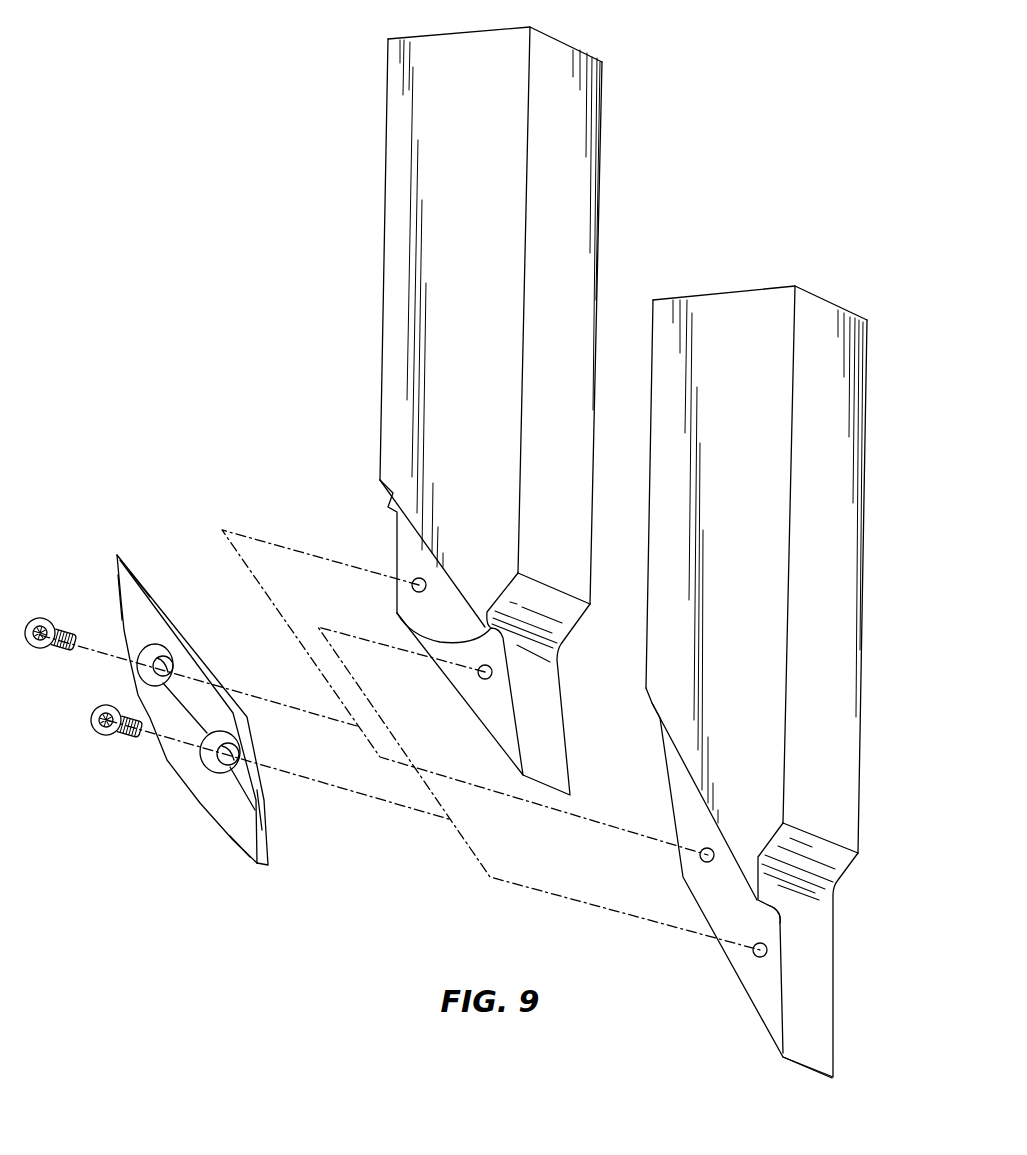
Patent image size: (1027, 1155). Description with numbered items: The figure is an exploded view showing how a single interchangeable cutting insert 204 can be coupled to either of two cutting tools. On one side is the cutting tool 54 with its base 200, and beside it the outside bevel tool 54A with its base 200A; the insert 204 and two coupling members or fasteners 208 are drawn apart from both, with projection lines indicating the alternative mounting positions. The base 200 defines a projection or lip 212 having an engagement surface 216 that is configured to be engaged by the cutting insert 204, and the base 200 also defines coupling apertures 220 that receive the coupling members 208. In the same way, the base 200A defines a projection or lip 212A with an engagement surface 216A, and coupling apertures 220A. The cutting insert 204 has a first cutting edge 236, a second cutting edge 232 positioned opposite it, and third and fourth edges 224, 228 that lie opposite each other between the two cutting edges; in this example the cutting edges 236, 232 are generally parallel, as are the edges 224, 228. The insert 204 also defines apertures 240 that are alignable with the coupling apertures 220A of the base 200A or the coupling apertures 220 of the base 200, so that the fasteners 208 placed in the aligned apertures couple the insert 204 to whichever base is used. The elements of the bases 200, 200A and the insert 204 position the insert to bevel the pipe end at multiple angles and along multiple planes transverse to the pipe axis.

The tool 54 is at (495, 411).
The tool 54A is at (762, 682).
The base 200 is at (577, 177).
The base 200A is at (840, 398).
The cutting insert 204 is at (190, 706).
The coupling members 208 is at (47, 650).
The projection or lip 212 is at (380, 483).
The projection or lip 212A is at (652, 703).
The engagement surface 216 is at (450, 641).
The engagement surface 216A is at (780, 920).
The coupling apertures 220 is at (415, 579).
The coupling apertures 220A is at (699, 861).
The third edge 224 is at (262, 815).
The fourth edge 228 is at (120, 598).
The second cutting edge 232 is at (153, 593).
The first cutting edge 236 is at (236, 838).
The apertures 240 is at (173, 662).